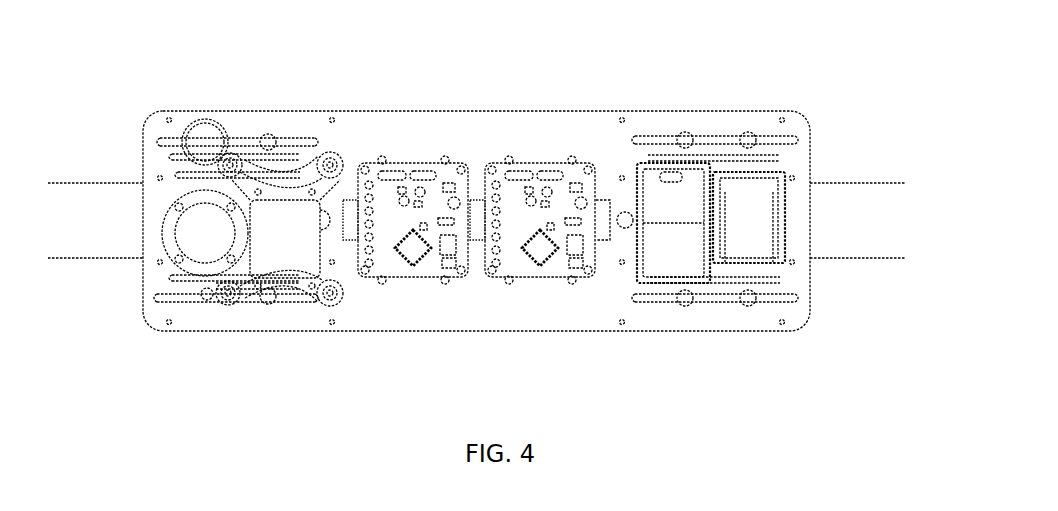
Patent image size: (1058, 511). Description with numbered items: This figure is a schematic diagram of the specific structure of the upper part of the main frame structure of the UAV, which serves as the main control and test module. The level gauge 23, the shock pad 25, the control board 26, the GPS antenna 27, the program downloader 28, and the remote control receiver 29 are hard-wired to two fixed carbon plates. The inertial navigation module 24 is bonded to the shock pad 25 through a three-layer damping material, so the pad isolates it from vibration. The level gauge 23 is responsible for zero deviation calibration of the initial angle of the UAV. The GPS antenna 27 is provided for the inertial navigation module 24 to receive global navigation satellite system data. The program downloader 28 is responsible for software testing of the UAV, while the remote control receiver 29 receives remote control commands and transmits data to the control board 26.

The level gauge 23 is at (228, 192).
The inertial navigation module 24 is at (317, 200).
The shock pad 25 is at (250, 283).
The control board 26 is at (373, 272).
The GPS antenna 27 is at (205, 142).
The program downloader 28 is at (668, 282).
The remote control receiver 29 is at (757, 263).